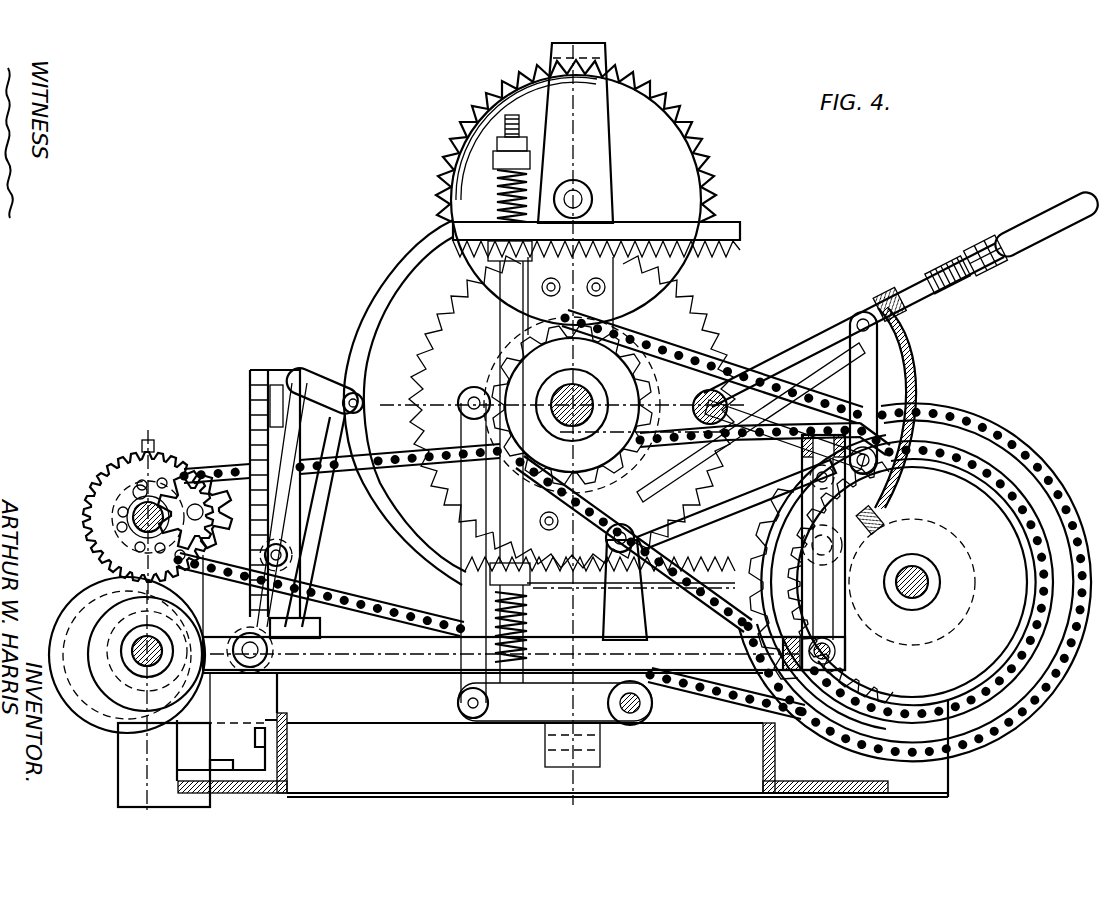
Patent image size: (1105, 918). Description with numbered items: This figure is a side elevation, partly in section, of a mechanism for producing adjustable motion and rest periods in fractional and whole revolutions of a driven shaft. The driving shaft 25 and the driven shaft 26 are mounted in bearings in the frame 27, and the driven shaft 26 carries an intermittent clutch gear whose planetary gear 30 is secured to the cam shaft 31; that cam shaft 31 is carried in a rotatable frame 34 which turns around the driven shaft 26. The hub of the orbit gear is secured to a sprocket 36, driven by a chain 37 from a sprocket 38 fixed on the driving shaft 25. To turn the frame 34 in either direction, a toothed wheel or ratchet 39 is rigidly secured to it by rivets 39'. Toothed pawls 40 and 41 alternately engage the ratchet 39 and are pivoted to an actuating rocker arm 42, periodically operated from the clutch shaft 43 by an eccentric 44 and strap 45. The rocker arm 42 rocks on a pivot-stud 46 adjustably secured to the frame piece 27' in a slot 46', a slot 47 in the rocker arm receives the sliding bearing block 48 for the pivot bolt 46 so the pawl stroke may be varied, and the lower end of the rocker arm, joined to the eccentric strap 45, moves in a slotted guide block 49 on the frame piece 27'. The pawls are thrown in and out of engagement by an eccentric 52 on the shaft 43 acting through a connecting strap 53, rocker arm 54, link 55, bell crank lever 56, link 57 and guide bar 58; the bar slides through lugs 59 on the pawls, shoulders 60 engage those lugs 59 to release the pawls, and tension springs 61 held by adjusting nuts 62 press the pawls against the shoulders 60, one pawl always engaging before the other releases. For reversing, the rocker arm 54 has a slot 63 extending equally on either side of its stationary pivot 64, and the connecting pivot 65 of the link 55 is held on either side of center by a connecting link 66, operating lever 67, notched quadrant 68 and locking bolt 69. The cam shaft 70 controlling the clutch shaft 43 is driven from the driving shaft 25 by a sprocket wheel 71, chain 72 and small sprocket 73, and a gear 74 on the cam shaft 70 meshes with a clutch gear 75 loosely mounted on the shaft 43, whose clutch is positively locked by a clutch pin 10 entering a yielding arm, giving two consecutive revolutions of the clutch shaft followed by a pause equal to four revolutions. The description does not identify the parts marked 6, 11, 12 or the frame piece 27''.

The shaft center line / bracket 6 is at (572, 425).
The clutch pin 10 is at (164, 608).
The drive chain 11 is at (835, 420).
The base plate 12 is at (278, 430).
The driving shaft 25 is at (942, 585).
The driven shaft 26 is at (575, 396).
The frame 27 is at (977, 748).
The frame piece 27' is at (470, 531).
The frame column 27'' is at (246, 493).
The planetary gear 30 is at (702, 160).
The cam shaft 31 is at (592, 198).
The rotatable frame 34 is at (588, 152).
The sprocket 36 is at (632, 400).
The chain 37 is at (708, 348).
The sprocket 38 is at (730, 549).
The ratchet 39 is at (448, 396).
The rivets 39' is at (597, 293).
The toothed pawl 40 is at (742, 232).
The toothed pawl 41 is at (580, 578).
The actuating rocker arm 42 is at (314, 503).
The clutch shaft 43 is at (149, 700).
The eccentric 44 is at (80, 628).
The eccentric strap 45 is at (243, 632).
The pivot-stud 46 is at (309, 555).
The slot 46' is at (236, 406).
The slot 47 is at (344, 386).
The bearing block 48 is at (312, 590).
The slotted guide block 49 is at (321, 631).
The eccentric 52 is at (116, 698).
The connecting strap 53 is at (410, 672).
The rocker arm 54 is at (838, 613).
The link 55 is at (665, 525).
The bell crank lever 56 is at (644, 618).
The link 57 is at (470, 530).
The guide bar 58 is at (505, 318).
The lugs 59 is at (533, 236).
The shoulders 60 is at (508, 262).
The tension springs 61 is at (500, 193).
The adjusting nuts 62 is at (496, 155).
The slot 63 is at (834, 488).
The stationary pivot 64 is at (836, 545).
The connecting pivot 65 is at (800, 482).
The connecting link 66 is at (880, 374).
The operating lever 67 is at (990, 236).
The notched quadrant 68 is at (914, 385).
The locking bolt 69 is at (886, 296).
The cam shaft 70 is at (136, 487).
The sprocket wheel 71 is at (992, 706).
The chain 72 is at (718, 706).
The small sprocket 73 is at (82, 516).
The gear 74 is at (150, 440).
The clutch gear 75 is at (212, 534).